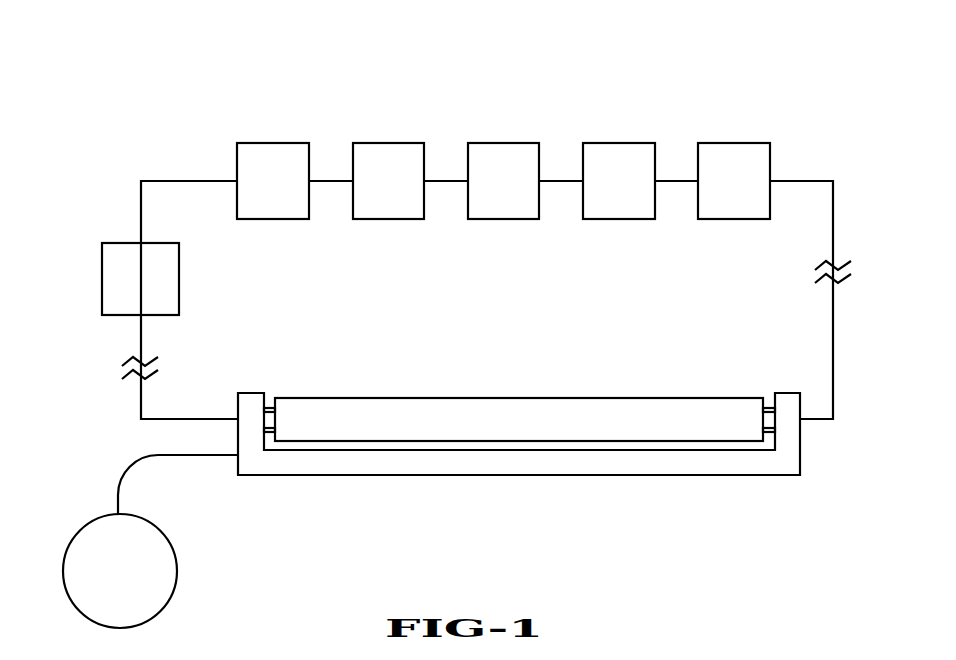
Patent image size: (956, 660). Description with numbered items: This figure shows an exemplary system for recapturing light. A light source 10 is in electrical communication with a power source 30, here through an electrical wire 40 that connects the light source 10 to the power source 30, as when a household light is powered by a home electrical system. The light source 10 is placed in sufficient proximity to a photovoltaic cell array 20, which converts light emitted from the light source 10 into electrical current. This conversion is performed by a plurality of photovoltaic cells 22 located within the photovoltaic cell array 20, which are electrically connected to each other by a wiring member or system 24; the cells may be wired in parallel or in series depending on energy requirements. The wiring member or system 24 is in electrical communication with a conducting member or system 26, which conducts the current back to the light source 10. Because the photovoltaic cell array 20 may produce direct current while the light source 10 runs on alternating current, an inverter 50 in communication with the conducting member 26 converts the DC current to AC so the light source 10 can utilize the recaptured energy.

The light source 10 is at (733, 486).
The photovoltaic cell array 20 is at (790, 147).
The photovoltaic cells 22 is at (497, 173).
The wiring member or system 24 is at (322, 180).
The conducting member or system 26 is at (163, 181).
The power source 30 is at (170, 603).
The electrical wire 40 is at (135, 465).
The inverter 50 is at (102, 268).